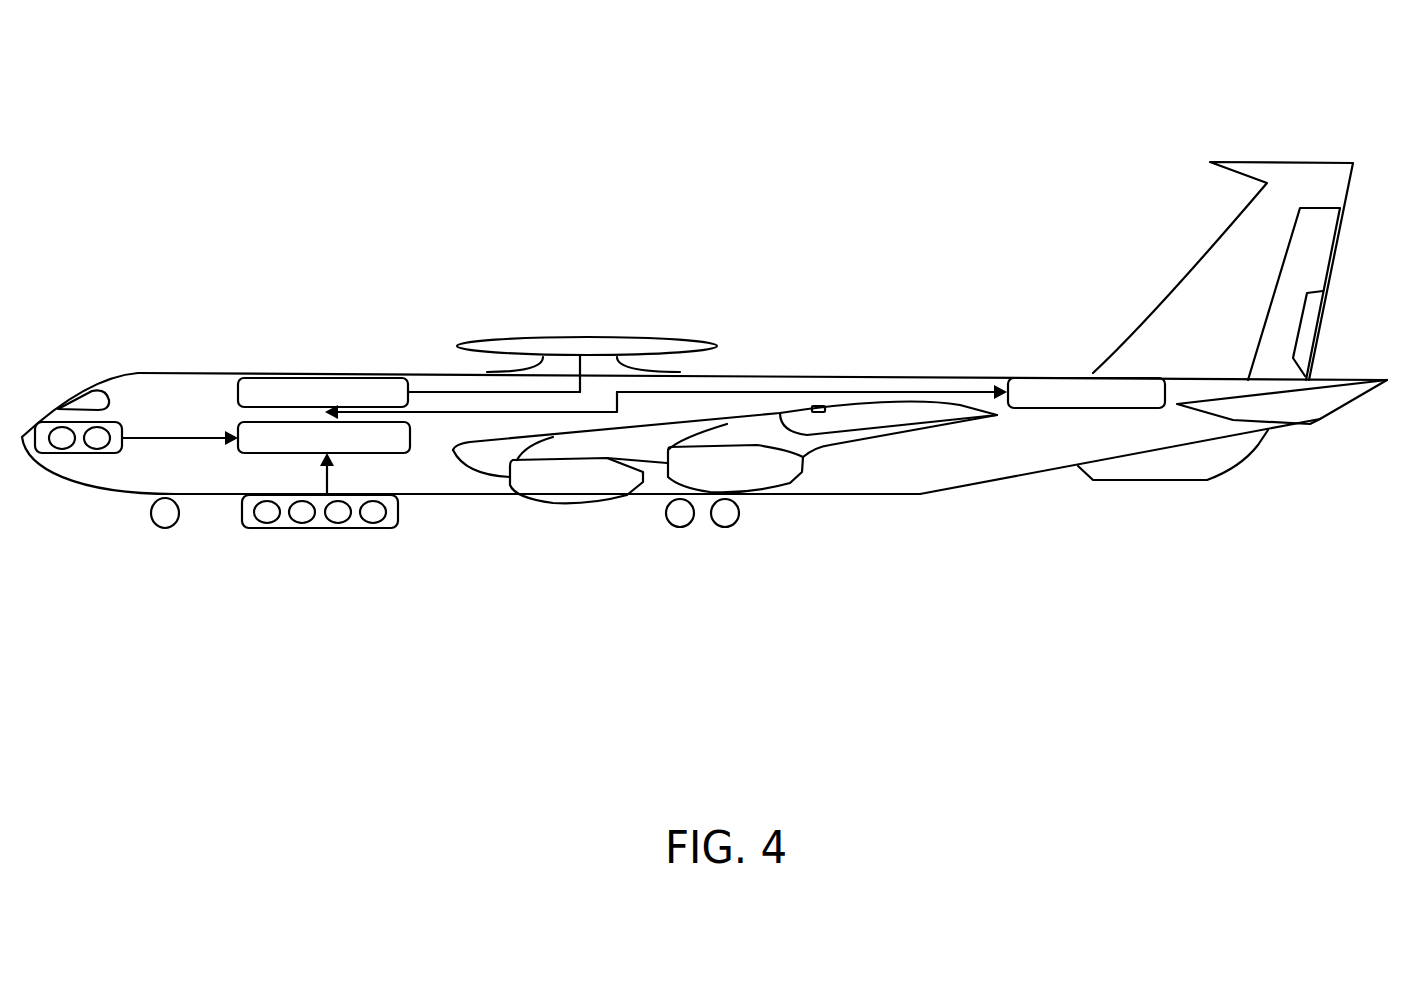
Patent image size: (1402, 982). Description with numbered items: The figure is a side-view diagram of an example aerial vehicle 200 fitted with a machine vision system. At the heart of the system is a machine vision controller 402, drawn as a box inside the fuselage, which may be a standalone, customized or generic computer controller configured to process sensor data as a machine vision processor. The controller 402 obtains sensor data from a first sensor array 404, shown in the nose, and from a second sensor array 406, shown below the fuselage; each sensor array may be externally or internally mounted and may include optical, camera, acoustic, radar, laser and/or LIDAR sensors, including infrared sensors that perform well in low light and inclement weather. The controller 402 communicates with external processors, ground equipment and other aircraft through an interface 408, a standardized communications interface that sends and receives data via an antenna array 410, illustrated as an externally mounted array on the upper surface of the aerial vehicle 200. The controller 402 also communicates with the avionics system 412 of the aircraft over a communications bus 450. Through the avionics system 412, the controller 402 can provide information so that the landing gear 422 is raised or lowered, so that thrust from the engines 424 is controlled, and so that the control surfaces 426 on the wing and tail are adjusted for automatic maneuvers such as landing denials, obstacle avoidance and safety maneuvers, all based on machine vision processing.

The aerial vehicle 200 is at (1147, 92).
The machine vision controller 402 is at (247, 453).
The first sensor array 404 is at (112, 422).
The second sensor array 406 is at (290, 528).
The interface 408 is at (328, 372).
The antenna array 410 is at (688, 338).
The avionics system 412 is at (1088, 408).
The landing gear 422 is at (734, 545).
The engines 424 is at (570, 518).
The control surfaces 426 is at (1217, 218).
The communications bus 450 is at (818, 392).